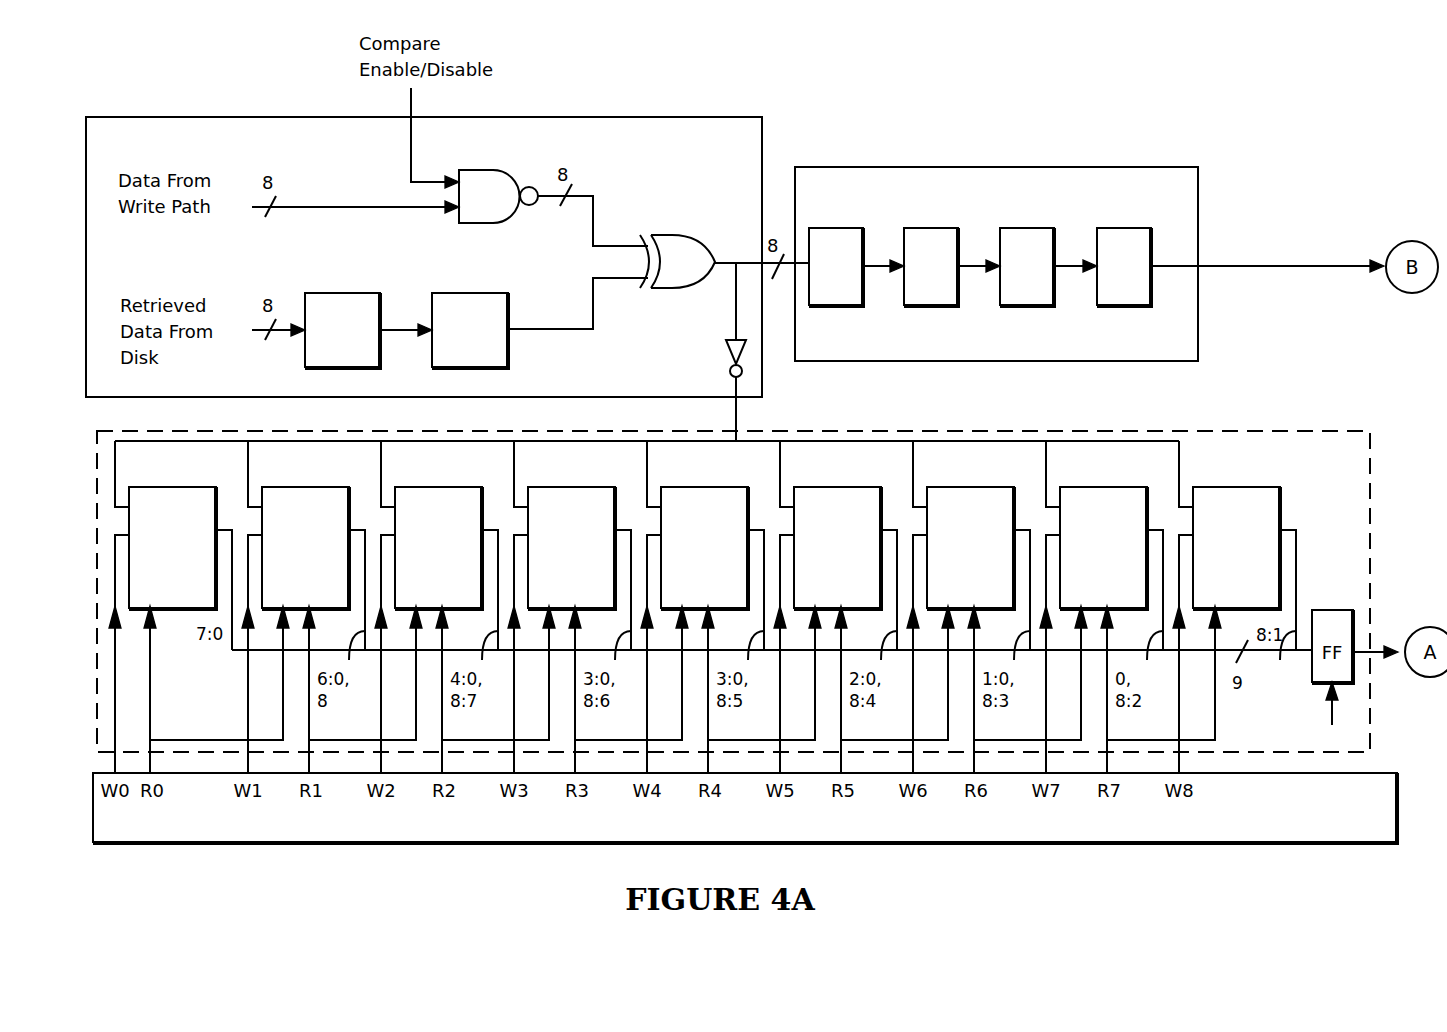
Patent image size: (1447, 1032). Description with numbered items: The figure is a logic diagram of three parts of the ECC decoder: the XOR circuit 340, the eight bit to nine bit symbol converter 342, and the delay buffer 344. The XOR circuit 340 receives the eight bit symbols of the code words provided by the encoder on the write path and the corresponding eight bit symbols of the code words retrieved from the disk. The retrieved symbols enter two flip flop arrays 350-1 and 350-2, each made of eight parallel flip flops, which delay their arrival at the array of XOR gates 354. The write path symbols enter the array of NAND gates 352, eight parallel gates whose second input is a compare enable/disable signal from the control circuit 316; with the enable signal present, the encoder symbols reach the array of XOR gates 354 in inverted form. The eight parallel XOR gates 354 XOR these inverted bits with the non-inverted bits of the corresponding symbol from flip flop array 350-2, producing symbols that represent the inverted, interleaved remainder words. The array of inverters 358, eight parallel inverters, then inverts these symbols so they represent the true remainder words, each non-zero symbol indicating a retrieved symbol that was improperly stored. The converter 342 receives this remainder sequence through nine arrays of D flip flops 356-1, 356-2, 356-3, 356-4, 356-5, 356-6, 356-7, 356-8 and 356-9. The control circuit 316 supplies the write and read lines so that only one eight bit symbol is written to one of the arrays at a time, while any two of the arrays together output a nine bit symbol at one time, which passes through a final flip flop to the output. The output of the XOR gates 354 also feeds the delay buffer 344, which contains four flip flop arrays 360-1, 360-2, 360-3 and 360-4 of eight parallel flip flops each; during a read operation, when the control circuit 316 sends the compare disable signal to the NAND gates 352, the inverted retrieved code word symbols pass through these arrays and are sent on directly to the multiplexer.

The XOR circuit 340 is at (128, 117).
The 8 bit to 9 bit symbol converter 342 is at (843, 431).
The delay buffer 344 is at (888, 167).
The flip flop array 350-1 is at (322, 293).
The flip flop array 350-2 is at (460, 293).
The array of NAND gates 352 is at (476, 170).
The array of XOR gates 354 is at (684, 235).
The array of D flip flops 356-1 is at (141, 487).
The array of D flip flops 356-2 is at (274, 487).
The array of D flip flops 356-3 is at (407, 487).
The array of D flip flops 356-4 is at (540, 487).
The array of D flip flops 356-5 is at (673, 487).
The array of D flip flops 356-6 is at (806, 487).
The array of D flip flops 356-7 is at (939, 487).
The array of D flip flops 356-8 is at (1072, 487).
The array of D flip flops 356-9 is at (1205, 487).
The array of inverters 358 is at (717, 351).
The flip flop array 360-1 is at (835, 306).
The flip flop array 360-2 is at (930, 306).
The flip flop array 360-3 is at (1026, 306).
The flip flop array 360-4 is at (1123, 306).
The control circuit 316 is at (1128, 843).